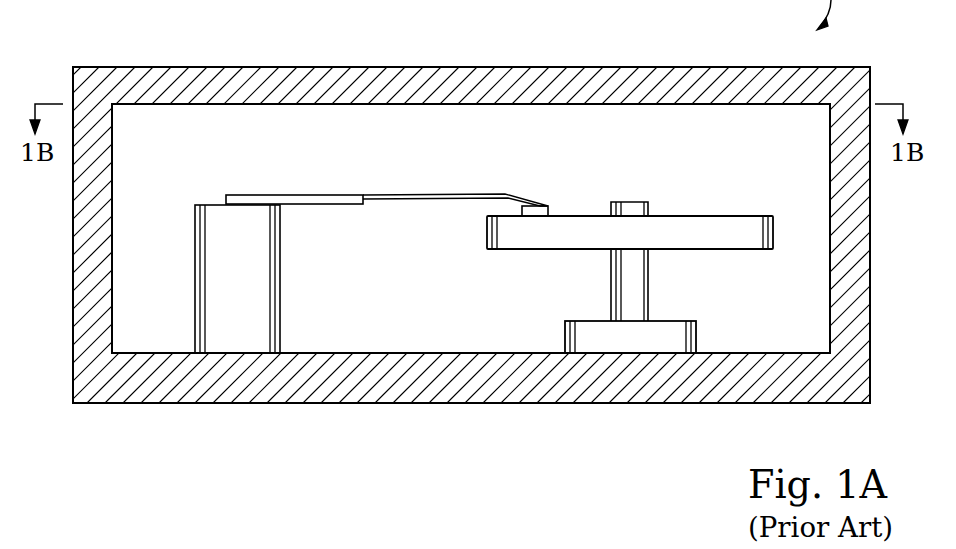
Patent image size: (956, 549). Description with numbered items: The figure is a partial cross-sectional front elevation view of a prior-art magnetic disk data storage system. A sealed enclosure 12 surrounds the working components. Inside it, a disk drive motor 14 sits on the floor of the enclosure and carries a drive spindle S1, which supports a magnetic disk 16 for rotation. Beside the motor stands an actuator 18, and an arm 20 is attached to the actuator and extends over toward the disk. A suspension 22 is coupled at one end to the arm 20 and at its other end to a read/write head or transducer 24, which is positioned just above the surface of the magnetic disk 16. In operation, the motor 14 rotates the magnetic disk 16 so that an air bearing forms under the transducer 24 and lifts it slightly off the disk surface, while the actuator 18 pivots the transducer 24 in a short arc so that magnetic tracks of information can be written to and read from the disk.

The sealed enclosure 12 is at (455, 395).
The disk drive motor 14 is at (632, 336).
The magnetic disk 16 is at (715, 222).
The actuator 18 is at (262, 310).
The arm 20 is at (338, 199).
The suspension 22 is at (437, 196).
The transducer 24 is at (548, 211).
The drive spindle S1 is at (636, 210).